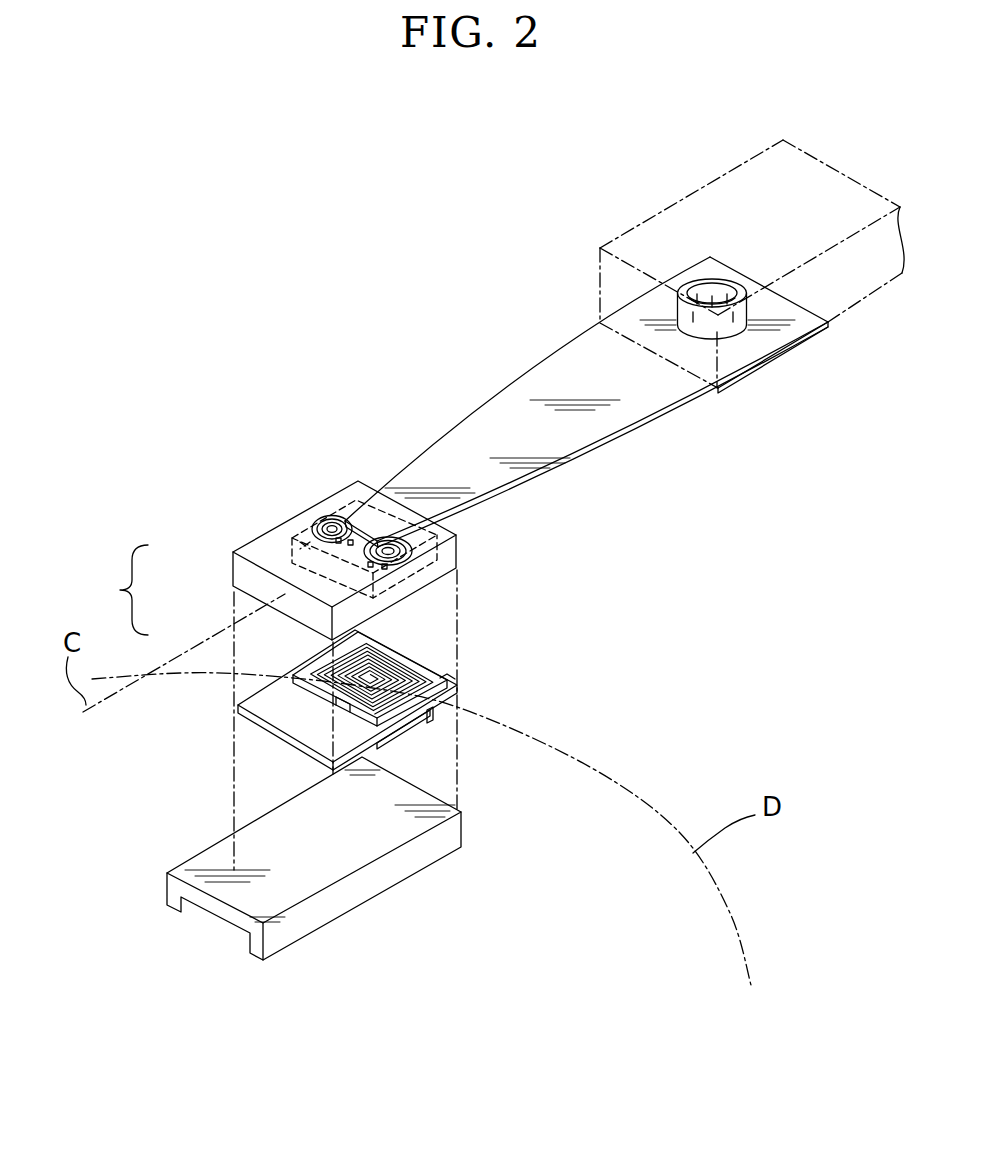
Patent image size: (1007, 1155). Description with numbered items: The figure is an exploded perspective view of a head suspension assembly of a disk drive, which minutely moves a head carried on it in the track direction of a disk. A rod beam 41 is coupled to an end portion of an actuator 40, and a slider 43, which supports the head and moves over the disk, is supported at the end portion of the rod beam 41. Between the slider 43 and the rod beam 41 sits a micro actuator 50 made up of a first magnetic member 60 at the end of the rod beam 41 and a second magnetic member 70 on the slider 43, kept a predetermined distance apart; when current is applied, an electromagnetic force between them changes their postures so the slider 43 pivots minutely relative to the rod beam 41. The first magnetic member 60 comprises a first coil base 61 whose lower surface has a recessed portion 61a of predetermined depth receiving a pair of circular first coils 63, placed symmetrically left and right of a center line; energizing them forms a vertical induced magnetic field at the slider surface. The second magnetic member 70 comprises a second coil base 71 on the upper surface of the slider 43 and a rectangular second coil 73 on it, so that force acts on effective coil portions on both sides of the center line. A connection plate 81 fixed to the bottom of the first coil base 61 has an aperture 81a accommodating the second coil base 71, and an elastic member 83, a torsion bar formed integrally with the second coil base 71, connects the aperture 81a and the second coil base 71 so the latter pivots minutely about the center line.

The actuator 40 is at (845, 310).
The rod beam 41 is at (635, 430).
The slider 43 is at (350, 910).
The micro actuator 50 is at (114, 590).
The first magnetic member 60 is at (301, 528).
The first coil base 61 is at (260, 532).
The recessed portion 61a is at (297, 533).
The first coils 63 is at (333, 520).
The second magnetic member 70 is at (302, 680).
The second coil base 71 is at (403, 707).
The second coil 73 is at (393, 670).
The connection plate 81 is at (316, 707).
The aperture 81a is at (447, 675).
The elastic member 83 is at (330, 696).